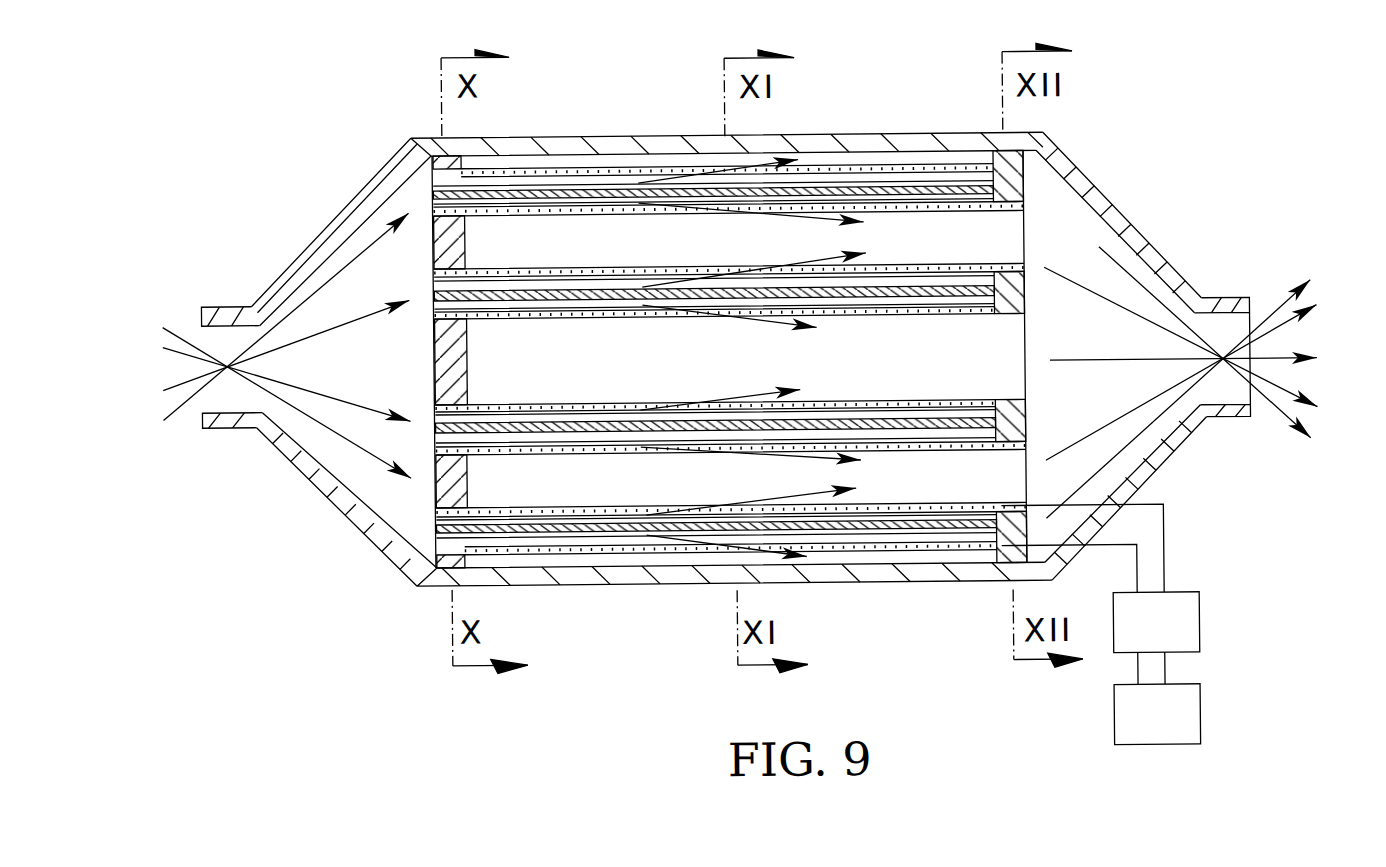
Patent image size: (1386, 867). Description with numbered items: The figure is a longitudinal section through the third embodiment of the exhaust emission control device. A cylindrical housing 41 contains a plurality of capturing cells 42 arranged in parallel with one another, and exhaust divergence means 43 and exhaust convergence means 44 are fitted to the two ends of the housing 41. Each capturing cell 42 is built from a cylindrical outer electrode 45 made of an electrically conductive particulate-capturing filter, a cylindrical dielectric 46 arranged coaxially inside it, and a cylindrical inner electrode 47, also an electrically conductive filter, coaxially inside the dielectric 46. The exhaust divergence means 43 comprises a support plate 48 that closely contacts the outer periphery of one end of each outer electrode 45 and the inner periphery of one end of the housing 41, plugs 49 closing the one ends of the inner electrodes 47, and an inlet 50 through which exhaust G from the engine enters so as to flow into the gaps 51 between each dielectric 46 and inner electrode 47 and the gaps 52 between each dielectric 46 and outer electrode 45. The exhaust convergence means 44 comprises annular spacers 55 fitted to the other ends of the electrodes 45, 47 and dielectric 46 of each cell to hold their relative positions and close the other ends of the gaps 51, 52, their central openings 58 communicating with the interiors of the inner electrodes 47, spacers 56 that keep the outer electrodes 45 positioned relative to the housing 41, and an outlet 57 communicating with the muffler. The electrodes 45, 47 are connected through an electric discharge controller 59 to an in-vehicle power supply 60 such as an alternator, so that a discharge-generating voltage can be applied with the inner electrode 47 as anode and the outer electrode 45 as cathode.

The cylindrical housing 41 is at (540, 142).
The capturing cell 42 is at (685, 164).
The exhaust divergence means 43 is at (337, 512).
The exhaust convergence means 44 is at (1152, 233).
The outer electrode 45 is at (595, 172).
The dielectric 46 is at (638, 196).
The inner electrode 47 is at (962, 212).
The support plate 48 is at (452, 382).
The plug 49 is at (456, 258).
The inlet 50 is at (228, 420).
The gap 51 is at (908, 192).
The gap 52 is at (862, 176).
The spacer 55 is at (1013, 291).
The spacer 56 is at (1012, 168).
The outlet 57 is at (1232, 307).
The central opening 58 is at (1012, 226).
The electric discharge controller 59 is at (1180, 628).
The in-vehicle power supply 60 is at (1180, 716).
The exhaust G is at (178, 322).